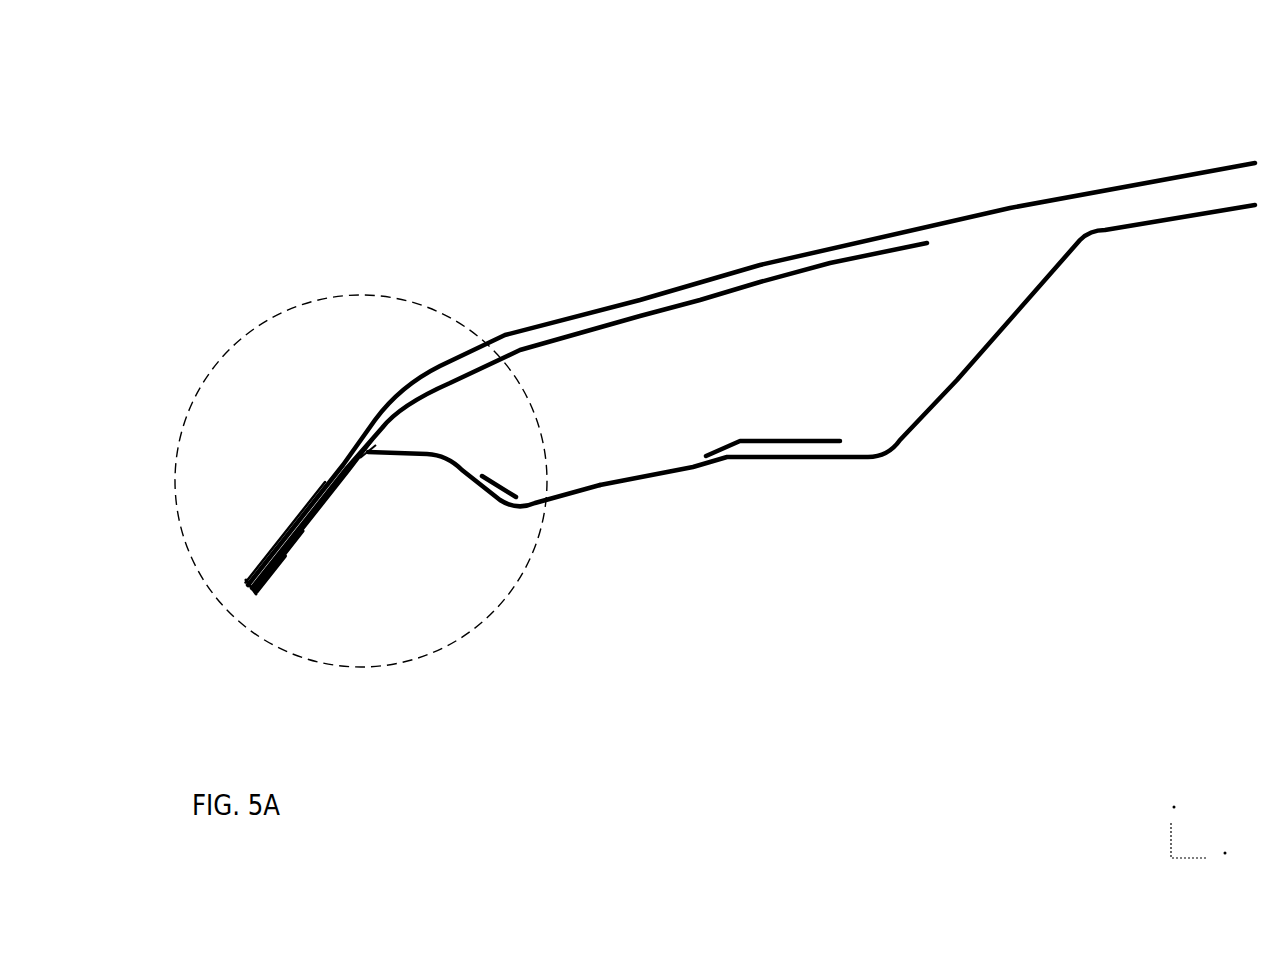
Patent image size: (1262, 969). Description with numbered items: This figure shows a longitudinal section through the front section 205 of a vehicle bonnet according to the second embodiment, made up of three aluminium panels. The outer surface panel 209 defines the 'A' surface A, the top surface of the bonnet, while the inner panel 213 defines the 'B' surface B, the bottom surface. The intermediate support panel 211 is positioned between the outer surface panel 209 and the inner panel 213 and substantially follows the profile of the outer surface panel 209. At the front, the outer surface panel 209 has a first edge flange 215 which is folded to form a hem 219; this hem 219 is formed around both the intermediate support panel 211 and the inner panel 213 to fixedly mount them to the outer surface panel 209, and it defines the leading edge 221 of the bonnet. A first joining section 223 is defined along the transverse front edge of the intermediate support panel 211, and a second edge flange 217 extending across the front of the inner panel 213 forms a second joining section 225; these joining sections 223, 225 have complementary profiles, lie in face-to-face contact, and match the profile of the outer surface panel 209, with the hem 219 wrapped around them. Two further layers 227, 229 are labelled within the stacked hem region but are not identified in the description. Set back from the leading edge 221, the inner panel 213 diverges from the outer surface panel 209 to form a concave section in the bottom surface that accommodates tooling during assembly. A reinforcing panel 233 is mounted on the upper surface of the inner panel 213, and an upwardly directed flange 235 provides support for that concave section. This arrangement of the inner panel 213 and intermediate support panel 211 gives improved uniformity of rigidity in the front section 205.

The front section 205 is at (302, 437).
The outer surface panel 209 is at (1015, 205).
The intermediate support panel 211 is at (781, 279).
The inner panel 213 is at (952, 394).
The first edge flange 215 is at (260, 590).
The second edge flange 217 is at (277, 565).
The hem 219 is at (243, 600).
The leading edge 221 is at (242, 583).
The first joining section 223 is at (373, 447).
The second joining section 225 is at (343, 488).
The third strip 227 is at (298, 527).
The outer film 229 is at (288, 510).
The reinforcing panel 233 is at (733, 437).
The upwardly directed flange 235 is at (500, 478).
The 'A' surface A is at (643, 262).
The 'B' surface B is at (867, 503).